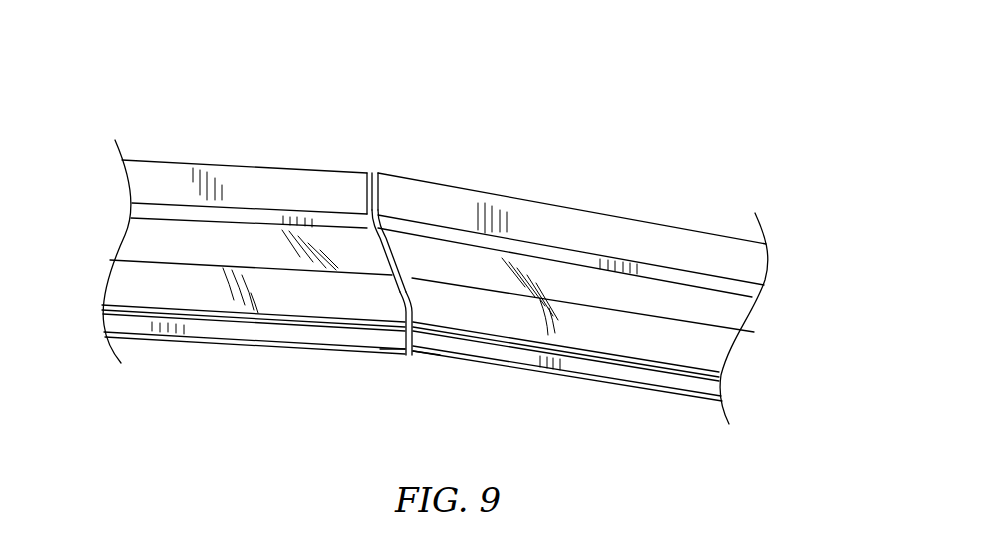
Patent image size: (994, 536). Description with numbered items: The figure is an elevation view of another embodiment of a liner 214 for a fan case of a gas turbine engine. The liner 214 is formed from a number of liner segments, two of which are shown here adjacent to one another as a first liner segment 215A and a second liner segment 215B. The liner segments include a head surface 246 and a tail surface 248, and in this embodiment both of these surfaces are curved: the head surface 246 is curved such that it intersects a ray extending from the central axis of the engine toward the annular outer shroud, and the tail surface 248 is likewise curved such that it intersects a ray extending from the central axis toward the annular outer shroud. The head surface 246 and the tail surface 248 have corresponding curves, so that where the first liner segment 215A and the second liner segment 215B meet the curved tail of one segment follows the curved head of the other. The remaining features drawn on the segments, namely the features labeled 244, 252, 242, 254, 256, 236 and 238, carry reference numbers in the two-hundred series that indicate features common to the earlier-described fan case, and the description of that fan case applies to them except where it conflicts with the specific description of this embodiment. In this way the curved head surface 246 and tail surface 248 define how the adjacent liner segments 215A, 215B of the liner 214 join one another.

The liner 214 is at (485, 96).
The first liner segment 215A is at (230, 146).
The second liner segment 215B is at (566, 186).
The top surface 244 is at (168, 162).
The first panel end edge 254 is at (333, 185).
The seam upper portion 256 is at (383, 195).
The head surface 246 is at (382, 247).
The tail surface 248 is at (406, 317).
The panel side surface 252 is at (162, 242).
The bottom rail 242 is at (150, 340).
The first panel lower end 236 is at (385, 376).
The second panel lower end 238 is at (437, 377).